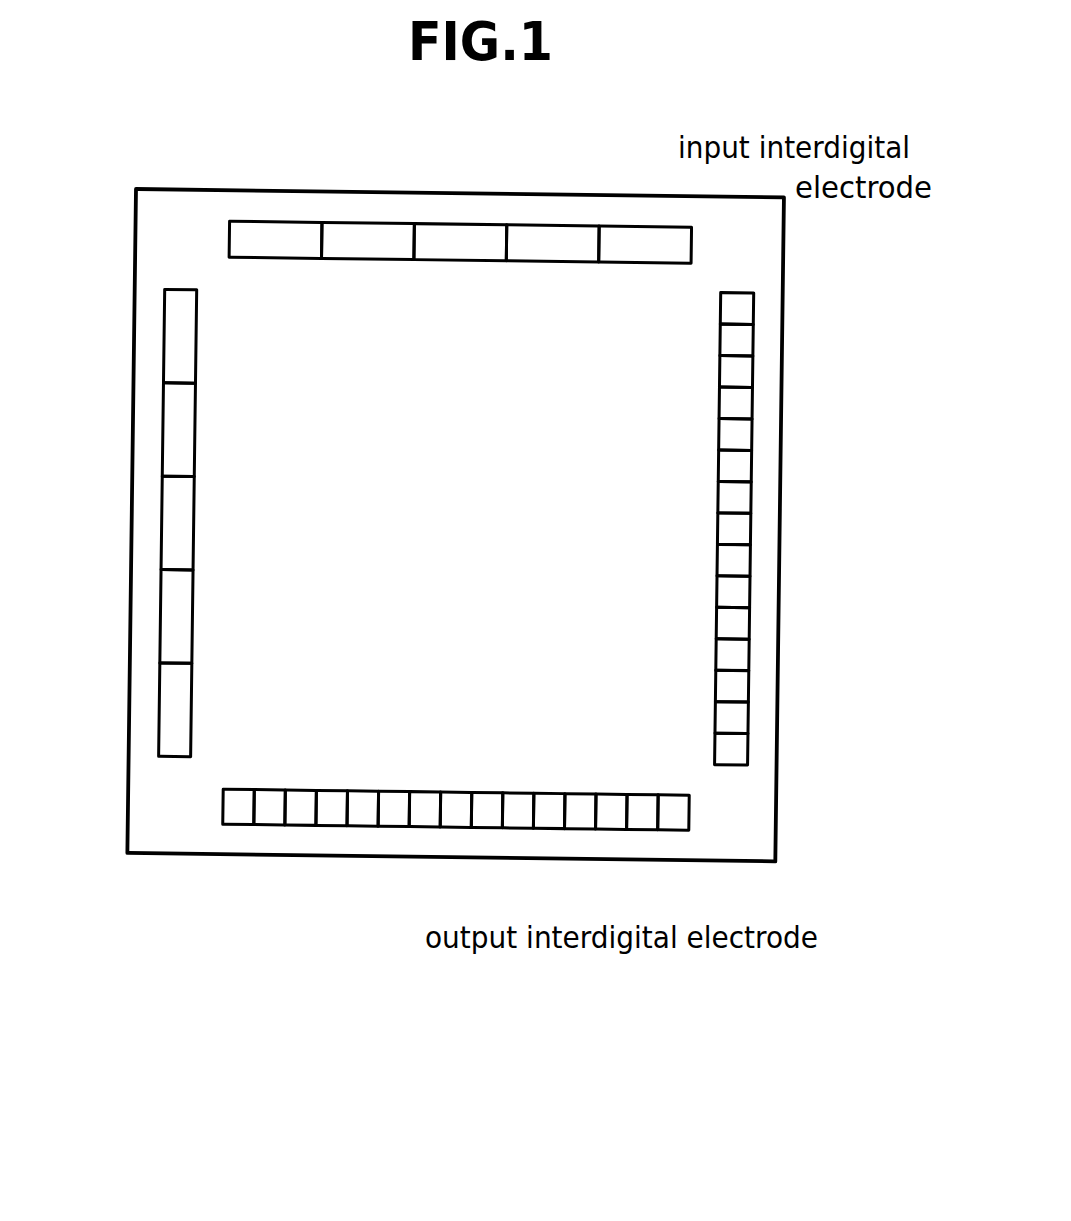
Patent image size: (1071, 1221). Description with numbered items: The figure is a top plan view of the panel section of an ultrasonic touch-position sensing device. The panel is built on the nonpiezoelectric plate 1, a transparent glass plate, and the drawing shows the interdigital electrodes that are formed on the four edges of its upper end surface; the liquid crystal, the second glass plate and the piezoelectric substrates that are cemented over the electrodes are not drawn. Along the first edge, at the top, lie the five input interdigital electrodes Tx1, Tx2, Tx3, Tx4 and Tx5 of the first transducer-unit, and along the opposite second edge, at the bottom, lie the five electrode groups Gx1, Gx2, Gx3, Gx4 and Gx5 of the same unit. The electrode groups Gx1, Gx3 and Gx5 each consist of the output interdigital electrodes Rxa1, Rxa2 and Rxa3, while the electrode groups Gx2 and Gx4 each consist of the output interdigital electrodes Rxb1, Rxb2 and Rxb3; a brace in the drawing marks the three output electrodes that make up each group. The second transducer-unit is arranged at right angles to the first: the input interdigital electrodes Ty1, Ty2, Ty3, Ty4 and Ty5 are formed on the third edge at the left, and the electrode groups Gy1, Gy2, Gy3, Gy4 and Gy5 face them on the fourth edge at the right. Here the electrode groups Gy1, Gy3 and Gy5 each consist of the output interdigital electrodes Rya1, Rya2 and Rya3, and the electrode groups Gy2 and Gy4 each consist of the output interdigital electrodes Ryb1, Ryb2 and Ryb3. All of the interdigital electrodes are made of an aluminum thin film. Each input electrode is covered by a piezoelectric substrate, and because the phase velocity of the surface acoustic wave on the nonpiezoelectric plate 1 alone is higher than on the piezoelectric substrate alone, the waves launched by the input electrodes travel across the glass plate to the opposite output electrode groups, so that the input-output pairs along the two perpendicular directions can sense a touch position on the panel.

The nonpiezoelectric plate 1 is at (150, 244).
The input interdigital electrode Tx1 is at (277, 237).
The input interdigital electrode Tx2 is at (370, 240).
The input interdigital electrode Tx3 is at (457, 240).
The input interdigital electrode Tx4 is at (547, 240).
The input interdigital electrode Tx5 is at (636, 240).
The input interdigital electrode Ty1 is at (175, 340).
The input interdigital electrode Ty2 is at (172, 430).
The input interdigital electrode Ty3 is at (172, 522).
The input interdigital electrode Ty4 is at (172, 615).
The input interdigital electrode Ty5 is at (172, 708).
The output interdigital electrode Rya1 is at (740, 313).
The output interdigital electrode Rya2 is at (742, 346).
The output interdigital electrode Rya3 is at (798, 368).
The output interdigital electrode Ryb1 is at (740, 408).
The output interdigital electrode Ryb2 is at (740, 436).
The output interdigital electrode Ryb3 is at (798, 486).
The output interdigital electrode Rxa1 is at (243, 813).
The output interdigital electrode Rxa2 is at (273, 813).
The output interdigital electrode Rxa3 is at (351, 872).
The output interdigital electrode Rxb1 is at (333, 803).
The output interdigital electrode Rxb2 is at (360, 805).
The output interdigital electrode Rxb3 is at (429, 743).
The electrode group Gx1 is at (338, 909).
The electrode group Gx2 is at (346, 707).
The electrode group Gx3 is at (492, 789).
The electrode group Gx4 is at (588, 791).
The electrode group Gx5 is at (688, 793).
The electrode group Gy1 is at (756, 324).
The electrode group Gy2 is at (756, 454).
The electrode group Gy3 is at (718, 485).
The electrode group Gy4 is at (718, 580).
The electrode group Gy5 is at (718, 762).